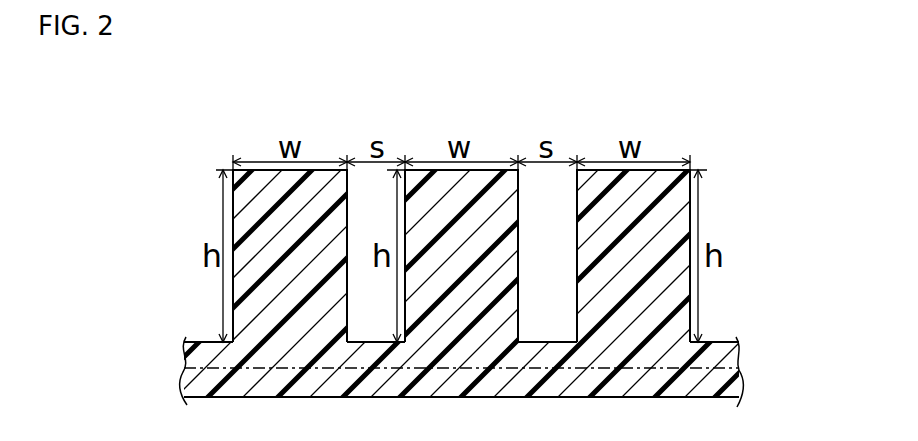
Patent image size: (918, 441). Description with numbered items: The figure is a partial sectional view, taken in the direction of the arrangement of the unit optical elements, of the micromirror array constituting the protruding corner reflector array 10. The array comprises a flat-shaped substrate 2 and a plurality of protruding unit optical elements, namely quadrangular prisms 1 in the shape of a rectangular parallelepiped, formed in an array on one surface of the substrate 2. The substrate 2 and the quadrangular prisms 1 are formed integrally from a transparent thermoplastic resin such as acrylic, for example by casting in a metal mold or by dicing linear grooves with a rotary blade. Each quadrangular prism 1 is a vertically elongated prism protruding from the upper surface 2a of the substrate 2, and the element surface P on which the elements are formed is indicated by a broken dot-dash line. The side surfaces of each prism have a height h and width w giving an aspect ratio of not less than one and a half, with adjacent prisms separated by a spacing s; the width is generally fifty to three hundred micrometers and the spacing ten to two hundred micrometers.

The quadrangular prism 1 is at (260, 152).
The substrate 2 is at (460, 285).
The upper surface 2a is at (552, 341).
The protruding corner reflector array 10 is at (460, 247).
The element surface P is at (715, 369).